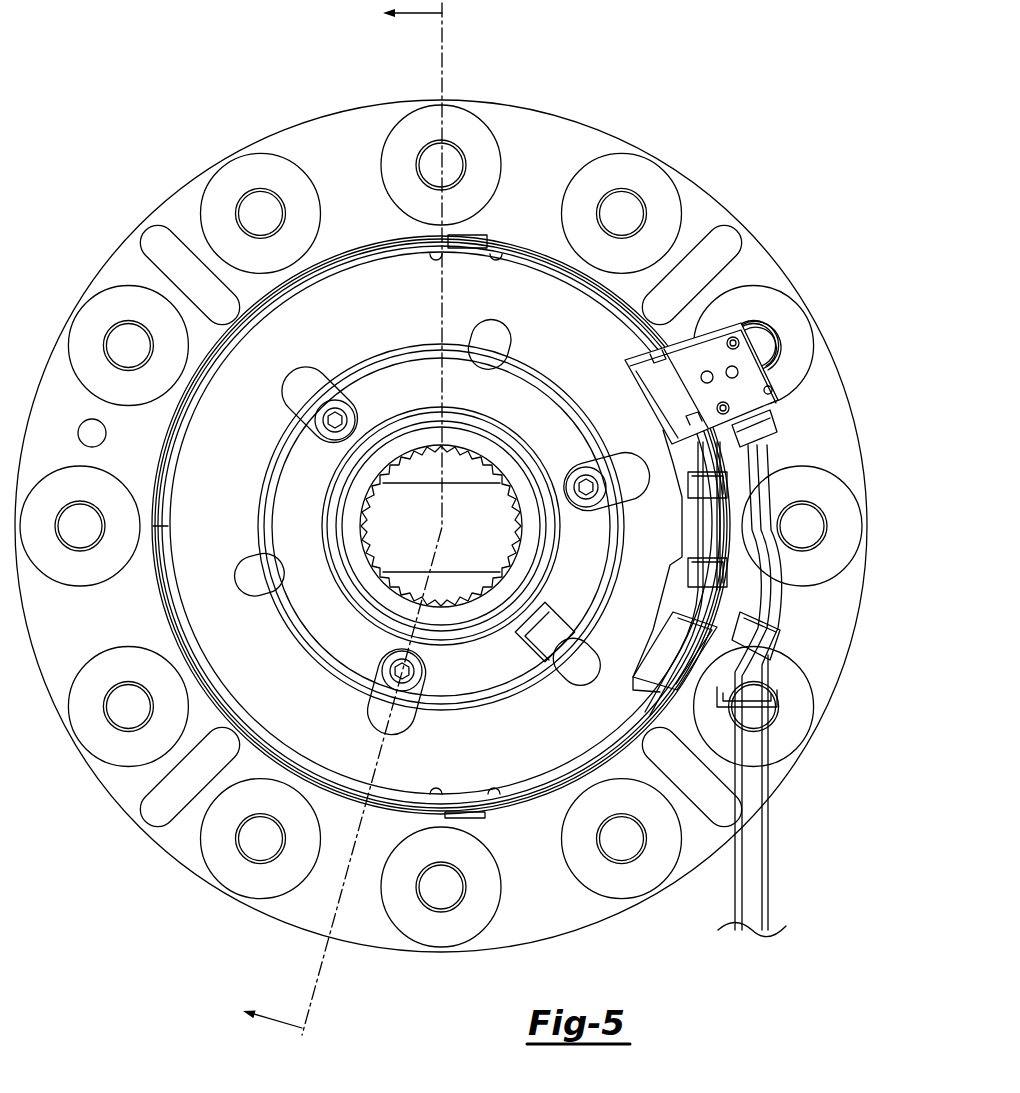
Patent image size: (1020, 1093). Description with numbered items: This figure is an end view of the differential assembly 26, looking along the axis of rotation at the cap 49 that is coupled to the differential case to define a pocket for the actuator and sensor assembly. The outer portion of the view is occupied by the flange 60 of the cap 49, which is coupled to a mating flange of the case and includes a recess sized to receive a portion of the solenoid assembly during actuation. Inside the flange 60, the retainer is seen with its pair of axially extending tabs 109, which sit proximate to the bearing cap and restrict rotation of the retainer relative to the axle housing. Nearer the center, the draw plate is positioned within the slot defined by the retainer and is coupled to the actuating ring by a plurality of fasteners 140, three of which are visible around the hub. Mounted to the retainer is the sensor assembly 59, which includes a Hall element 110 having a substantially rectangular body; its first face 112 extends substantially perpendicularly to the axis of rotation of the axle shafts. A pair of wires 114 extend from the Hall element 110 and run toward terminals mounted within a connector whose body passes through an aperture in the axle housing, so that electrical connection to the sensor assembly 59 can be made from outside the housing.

The differential assembly 26 is at (543, 85).
The flange 60 is at (322, 135).
The axially extending tabs 109 is at (483, 236).
The cap 49 is at (368, 597).
The fasteners 140 is at (325, 425).
The sensor assembly 59 is at (730, 312).
The Hall element 110 is at (688, 346).
The first face 112 is at (757, 380).
The wires 114 is at (782, 608).